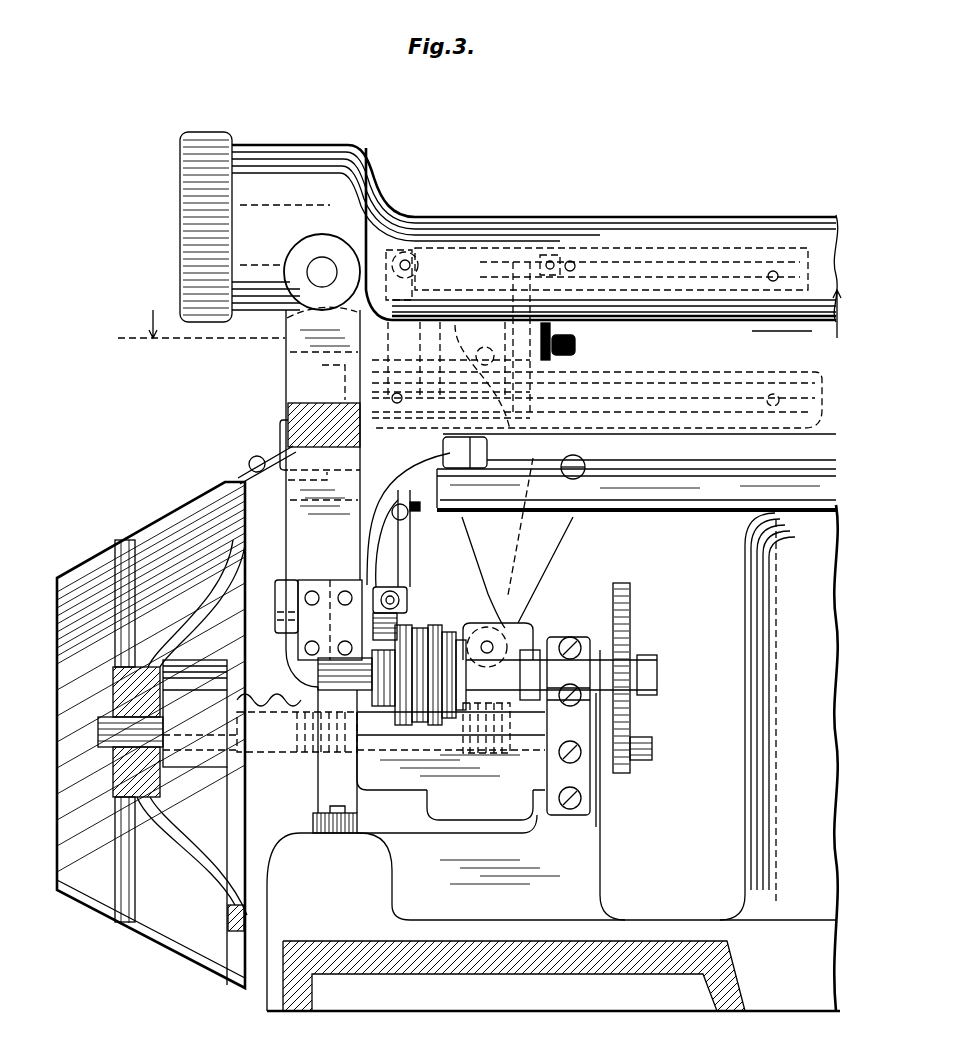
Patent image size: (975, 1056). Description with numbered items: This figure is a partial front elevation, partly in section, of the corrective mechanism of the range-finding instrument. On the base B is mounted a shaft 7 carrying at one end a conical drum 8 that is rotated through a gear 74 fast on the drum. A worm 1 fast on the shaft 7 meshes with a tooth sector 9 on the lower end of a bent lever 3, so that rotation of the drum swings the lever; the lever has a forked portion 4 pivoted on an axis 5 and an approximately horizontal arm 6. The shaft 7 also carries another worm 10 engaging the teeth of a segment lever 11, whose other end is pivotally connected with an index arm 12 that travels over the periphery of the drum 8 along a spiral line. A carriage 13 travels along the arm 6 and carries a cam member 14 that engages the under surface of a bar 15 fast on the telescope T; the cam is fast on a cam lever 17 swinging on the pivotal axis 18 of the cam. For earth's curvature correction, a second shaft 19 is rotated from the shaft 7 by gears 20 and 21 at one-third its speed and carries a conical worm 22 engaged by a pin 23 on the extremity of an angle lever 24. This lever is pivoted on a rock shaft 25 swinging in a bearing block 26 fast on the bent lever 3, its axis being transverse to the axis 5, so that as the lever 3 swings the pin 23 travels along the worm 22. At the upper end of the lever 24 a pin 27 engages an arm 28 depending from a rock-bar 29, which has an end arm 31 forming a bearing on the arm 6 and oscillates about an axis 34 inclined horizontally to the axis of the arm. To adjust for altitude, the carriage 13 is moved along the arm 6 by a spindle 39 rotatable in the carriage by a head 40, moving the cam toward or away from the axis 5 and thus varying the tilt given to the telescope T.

The telescope T is at (548, 218).
The base B is at (514, 976).
The worm 1 is at (318, 742).
The bent lever 3 is at (296, 518).
The forked portion 4 is at (290, 416).
The axis 5 is at (313, 285).
The horizontal arm 6 is at (735, 390).
The shaft 7 is at (602, 750).
The drum 8 is at (173, 950).
The tooth sector 9 is at (267, 700).
The worm 10 is at (500, 748).
The segment lever 11 is at (530, 583).
The index arm 12 is at (540, 445).
The carriage 13 is at (565, 345).
The cam member 14 is at (410, 280).
The bar 15 is at (733, 282).
The cam lever 17 is at (505, 262).
The pivotal axis 18 is at (402, 272).
The second shaft 19 is at (513, 662).
The gear 20 is at (630, 618).
The gear 21 is at (633, 757).
The conical worm 22 is at (422, 627).
The pin 23 is at (397, 620).
The angle lever 24 is at (408, 552).
The rock shaft 25 is at (392, 590).
The bearing block 26 is at (280, 590).
The pin 27 is at (414, 499).
The arm 28 is at (452, 453).
The rock-bar 29 is at (639, 447).
The arm 31 is at (636, 489).
The axis 34 is at (362, 585).
The spindle 39 is at (480, 365).
The head 40 is at (495, 375).
The gear 74 is at (250, 920).